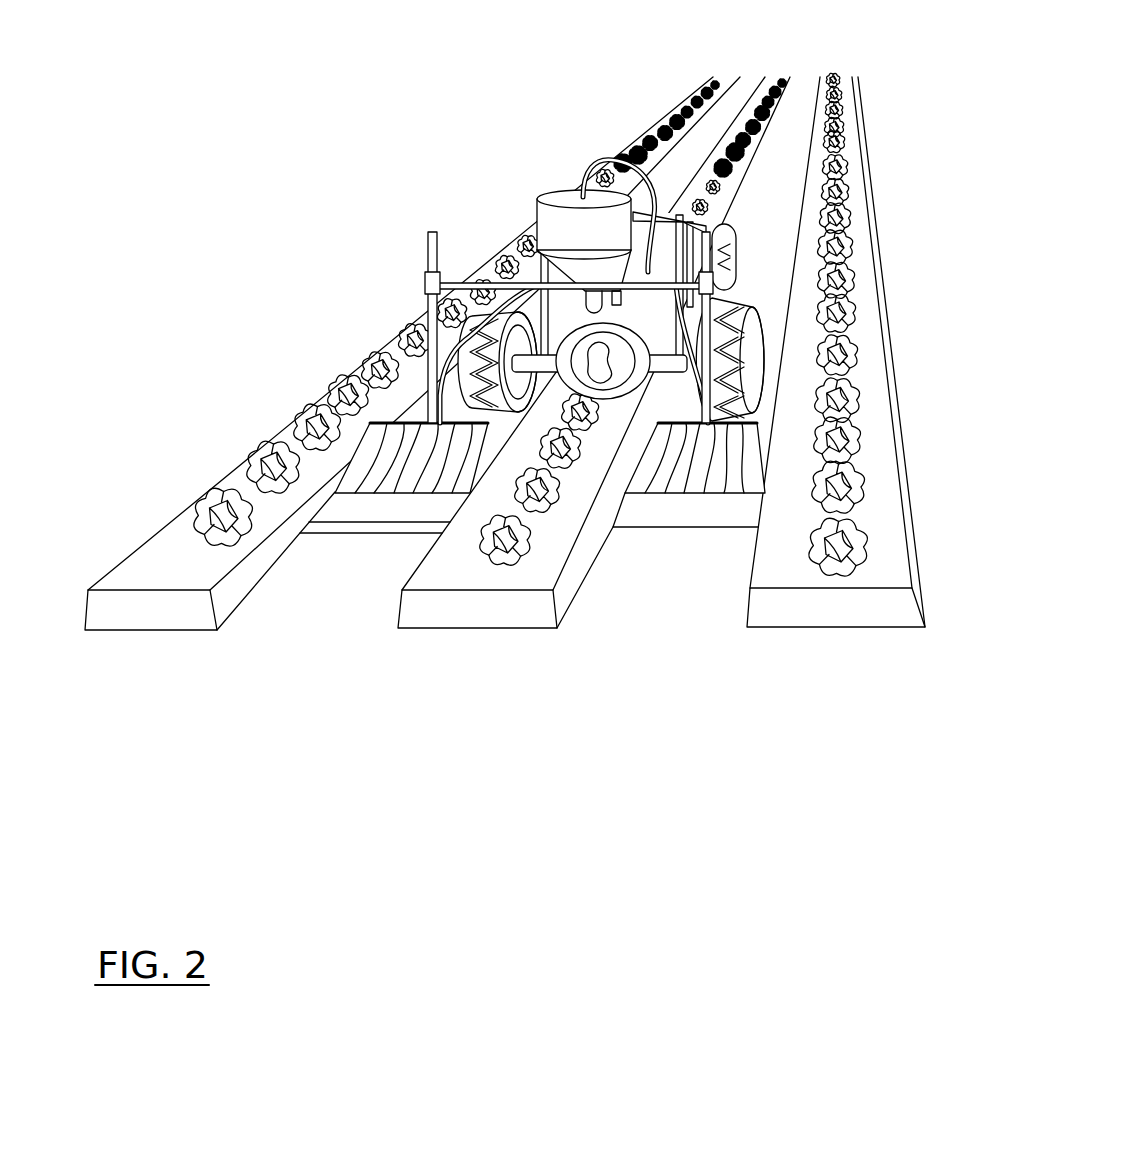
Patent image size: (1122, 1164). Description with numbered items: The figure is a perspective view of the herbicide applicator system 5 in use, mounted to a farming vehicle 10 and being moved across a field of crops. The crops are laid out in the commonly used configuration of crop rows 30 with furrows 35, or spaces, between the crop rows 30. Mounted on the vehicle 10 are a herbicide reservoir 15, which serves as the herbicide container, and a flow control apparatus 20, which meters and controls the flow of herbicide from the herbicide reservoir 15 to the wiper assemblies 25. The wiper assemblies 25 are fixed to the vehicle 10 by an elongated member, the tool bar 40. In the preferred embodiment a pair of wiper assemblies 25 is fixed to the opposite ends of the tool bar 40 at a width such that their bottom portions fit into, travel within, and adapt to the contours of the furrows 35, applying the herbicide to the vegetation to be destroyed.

The herbicide applicator system 5 is at (513, 400).
The vehicle 10 is at (603, 277).
The herbicide reservoir 15 is at (553, 194).
The flow control apparatus 20 is at (785, 160).
The wiper assembly 25 is at (420, 422).
The crop rows 30 is at (293, 417).
The furrows 35 is at (330, 583).
The tool bar 40 is at (453, 281).